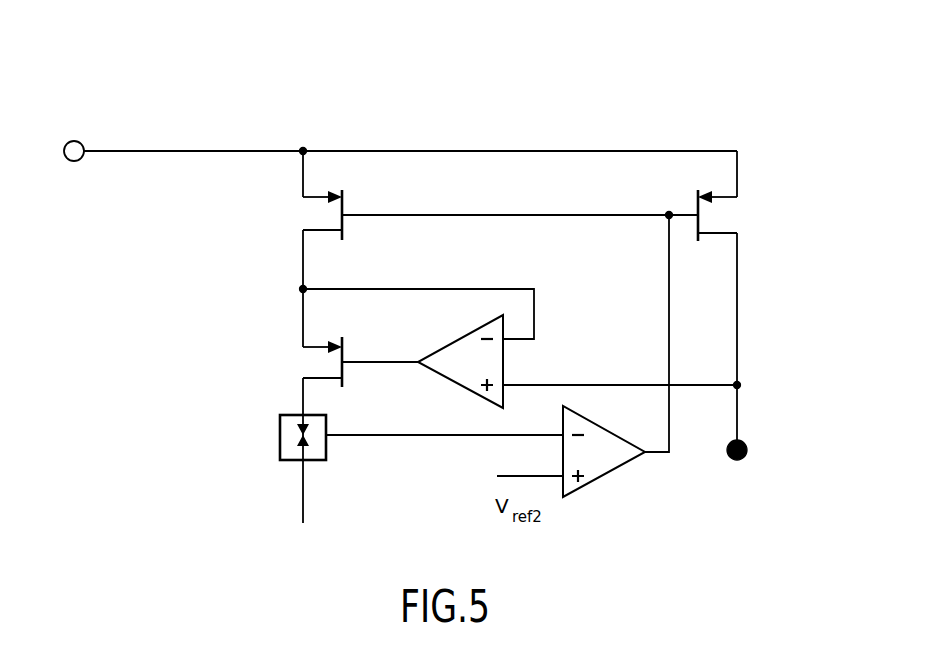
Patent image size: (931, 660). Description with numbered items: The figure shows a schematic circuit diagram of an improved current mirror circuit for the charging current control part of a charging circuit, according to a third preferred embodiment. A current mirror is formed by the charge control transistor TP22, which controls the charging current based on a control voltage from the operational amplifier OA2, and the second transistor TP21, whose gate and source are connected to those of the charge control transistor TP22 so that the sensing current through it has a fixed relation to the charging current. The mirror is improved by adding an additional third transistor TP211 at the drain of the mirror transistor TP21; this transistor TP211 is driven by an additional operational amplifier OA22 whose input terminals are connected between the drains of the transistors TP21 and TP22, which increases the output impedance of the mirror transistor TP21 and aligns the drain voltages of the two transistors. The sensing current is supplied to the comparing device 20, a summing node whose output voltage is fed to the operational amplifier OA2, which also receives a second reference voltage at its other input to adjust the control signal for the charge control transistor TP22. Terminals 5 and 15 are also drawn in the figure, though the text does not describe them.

The input terminal 5 is at (74, 170).
The output terminal 15 is at (745, 441).
The comparing device 20 is at (286, 444).
The second transistor TP21 is at (283, 213).
The additional third transistor TP211 is at (278, 336).
The charge control transistor TP22 is at (732, 221).
The additional operational amplifier OA22 is at (453, 332).
The operational amplifier OA2 is at (602, 420).